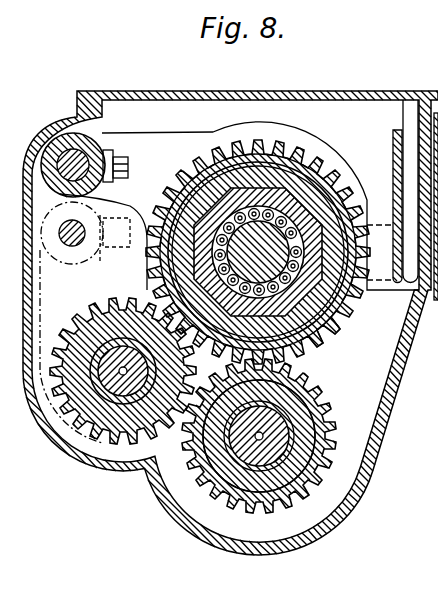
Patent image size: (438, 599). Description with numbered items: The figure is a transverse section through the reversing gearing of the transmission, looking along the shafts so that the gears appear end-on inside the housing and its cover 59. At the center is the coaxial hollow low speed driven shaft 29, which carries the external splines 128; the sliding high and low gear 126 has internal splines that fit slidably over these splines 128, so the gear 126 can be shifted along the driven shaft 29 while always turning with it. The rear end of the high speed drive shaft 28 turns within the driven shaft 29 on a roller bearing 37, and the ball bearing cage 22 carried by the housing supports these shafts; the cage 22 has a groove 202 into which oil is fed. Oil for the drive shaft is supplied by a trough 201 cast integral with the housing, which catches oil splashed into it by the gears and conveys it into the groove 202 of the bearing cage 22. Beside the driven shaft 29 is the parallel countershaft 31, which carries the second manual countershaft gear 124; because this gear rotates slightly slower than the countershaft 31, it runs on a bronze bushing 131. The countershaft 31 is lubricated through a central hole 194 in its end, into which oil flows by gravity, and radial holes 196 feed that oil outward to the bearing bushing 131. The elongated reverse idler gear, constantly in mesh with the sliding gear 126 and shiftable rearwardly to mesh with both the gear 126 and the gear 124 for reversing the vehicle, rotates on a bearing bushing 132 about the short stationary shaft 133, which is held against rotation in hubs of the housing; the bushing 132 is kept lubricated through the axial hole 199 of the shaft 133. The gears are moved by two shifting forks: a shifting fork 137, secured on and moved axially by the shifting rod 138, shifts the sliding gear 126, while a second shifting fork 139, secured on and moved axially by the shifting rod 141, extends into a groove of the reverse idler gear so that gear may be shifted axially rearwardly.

The cover 59 is at (300, 92).
The shifting fork 137 is at (168, 147).
The trough 201 is at (406, 115).
The shifting rod 138 is at (88, 148).
The shifting rod 141 is at (84, 240).
The second shifting fork 139 is at (100, 258).
The ball bearing cage 22 is at (281, 200).
The external splines 128 is at (150, 214).
The sliding high and low gear 126 is at (314, 346).
The coaxial hollow low speed driven shaft 29 is at (297, 200).
The groove 202 is at (310, 185).
The high speed drive shaft 28 is at (340, 185).
The roller bearing 37 is at (355, 197).
The bearing bushing 132 is at (77, 337).
The short stationary shaft 133 is at (112, 322).
The axial hole 199 is at (119, 338).
The second manual countershaft gear 124 is at (327, 407).
The bronze bushings 131 is at (233, 492).
The countershaft 31 is at (318, 448).
The radial holes 196 is at (267, 474).
The central hole 194 is at (265, 432).